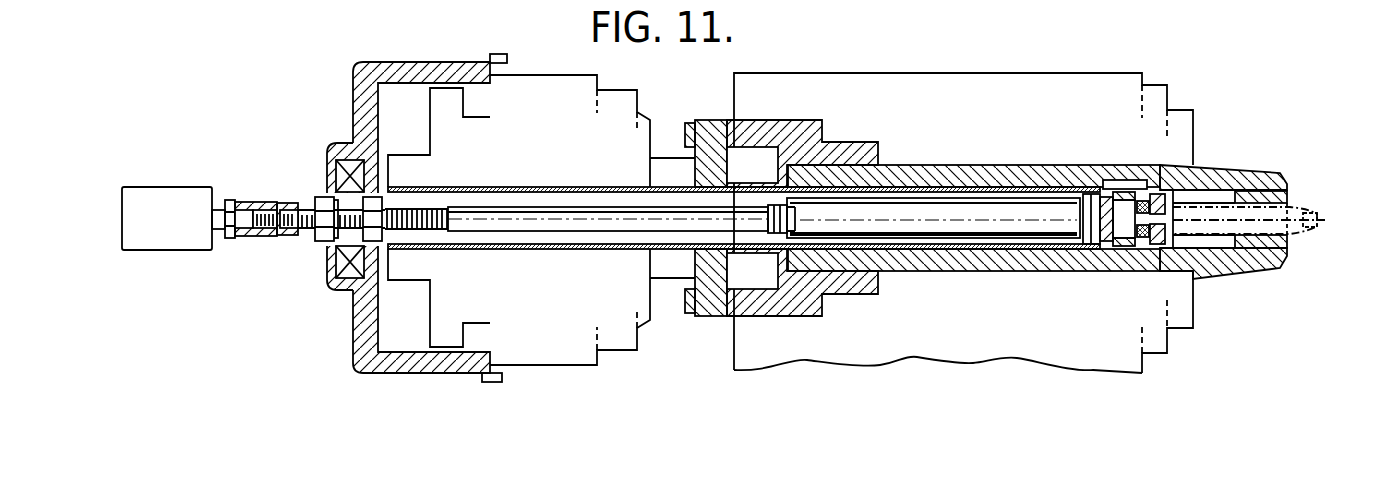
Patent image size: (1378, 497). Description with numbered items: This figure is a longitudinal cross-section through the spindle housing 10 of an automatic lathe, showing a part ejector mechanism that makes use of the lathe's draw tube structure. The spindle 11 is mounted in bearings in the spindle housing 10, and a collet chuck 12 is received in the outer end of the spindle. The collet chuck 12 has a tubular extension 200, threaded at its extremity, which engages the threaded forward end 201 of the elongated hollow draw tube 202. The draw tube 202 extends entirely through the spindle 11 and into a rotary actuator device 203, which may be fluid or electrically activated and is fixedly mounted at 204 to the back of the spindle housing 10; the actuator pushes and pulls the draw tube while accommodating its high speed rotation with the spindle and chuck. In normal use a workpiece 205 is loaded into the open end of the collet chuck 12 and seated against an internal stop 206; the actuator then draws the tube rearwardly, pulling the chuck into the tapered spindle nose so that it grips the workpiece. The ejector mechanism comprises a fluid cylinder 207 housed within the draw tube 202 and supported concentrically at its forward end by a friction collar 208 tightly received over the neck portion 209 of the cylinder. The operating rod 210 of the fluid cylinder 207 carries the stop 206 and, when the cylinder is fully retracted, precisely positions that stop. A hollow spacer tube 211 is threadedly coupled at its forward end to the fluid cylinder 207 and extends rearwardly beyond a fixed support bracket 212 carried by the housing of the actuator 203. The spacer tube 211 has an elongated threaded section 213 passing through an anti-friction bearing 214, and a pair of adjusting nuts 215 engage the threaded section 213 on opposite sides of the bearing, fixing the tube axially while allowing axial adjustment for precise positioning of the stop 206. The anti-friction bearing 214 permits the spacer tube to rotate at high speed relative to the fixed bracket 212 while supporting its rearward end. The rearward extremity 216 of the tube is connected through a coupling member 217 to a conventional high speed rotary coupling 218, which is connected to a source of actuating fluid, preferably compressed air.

The spindle housing 10 is at (1117, 83).
The spindle 11 is at (1208, 165).
The collet chuck 12 is at (1280, 183).
The tubular extension 200 is at (1147, 187).
The threaded forward end 201 is at (1117, 183).
The draw tube 202 is at (898, 183).
The rotary actuator device 203 is at (562, 120).
The fixed mounting 204 is at (712, 122).
The workpiece 205 is at (1300, 240).
The internal stop 206 is at (1193, 280).
The fluid cylinder 207 is at (945, 228).
The friction collar 208 is at (1072, 252).
The neck portion 209 is at (1103, 187).
The operating rod 210 is at (1118, 224).
The spacer tube 211 is at (537, 222).
The fixed support bracket 212 is at (352, 92).
The threaded section 213 is at (437, 216).
The anti-friction bearing 214 is at (340, 180).
The adjusting nuts 215 is at (320, 242).
The rearward extremity 216 is at (287, 208).
The coupling member 217 is at (270, 242).
The high speed rotary coupling 218 is at (163, 197).